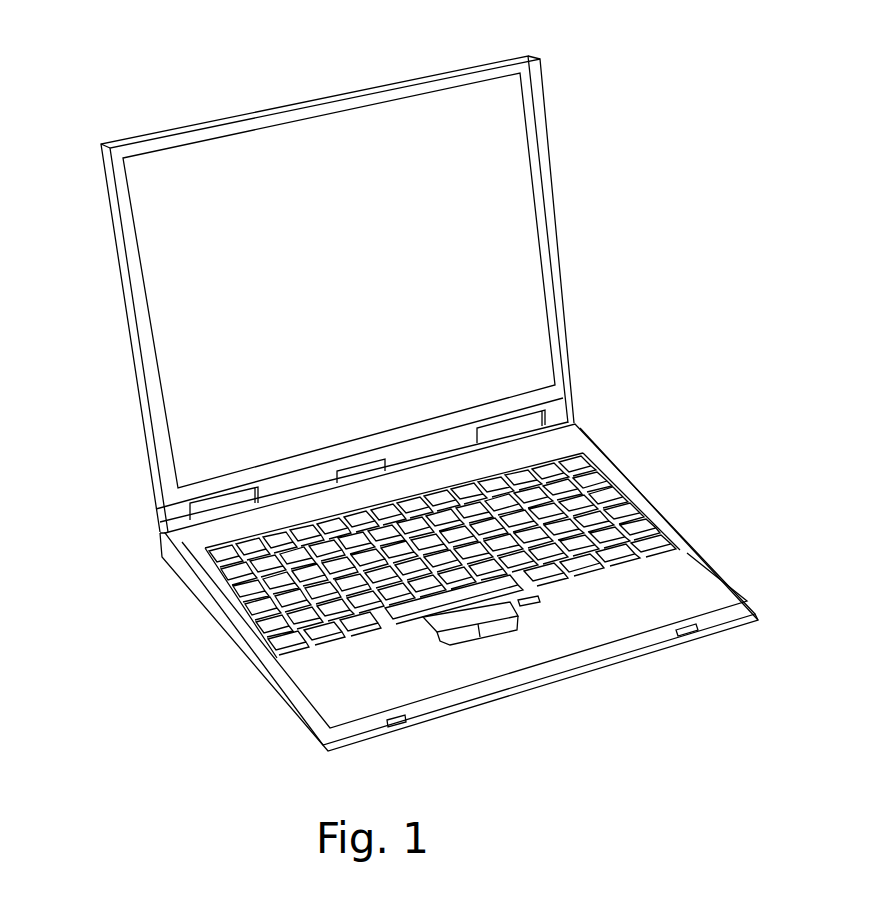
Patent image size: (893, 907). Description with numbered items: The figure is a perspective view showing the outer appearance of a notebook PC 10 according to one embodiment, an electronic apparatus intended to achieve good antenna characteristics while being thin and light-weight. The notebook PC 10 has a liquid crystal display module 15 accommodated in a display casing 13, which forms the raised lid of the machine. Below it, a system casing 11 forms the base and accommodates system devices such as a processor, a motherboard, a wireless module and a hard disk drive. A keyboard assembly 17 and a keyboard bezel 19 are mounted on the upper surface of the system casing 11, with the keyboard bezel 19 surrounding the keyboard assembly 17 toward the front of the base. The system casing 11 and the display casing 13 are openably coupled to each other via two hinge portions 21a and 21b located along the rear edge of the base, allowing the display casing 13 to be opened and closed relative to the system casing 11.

The notebook PC 10 is at (302, 87).
The system casing 11 is at (167, 560).
The display casing 13 is at (120, 246).
The liquid crystal display (LCD) module 15 is at (178, 378).
The keyboard assembly 17 is at (250, 608).
The keyboard bezel 19 is at (330, 692).
The hinge portion 21a is at (215, 512).
The hinge portion 21b is at (528, 422).